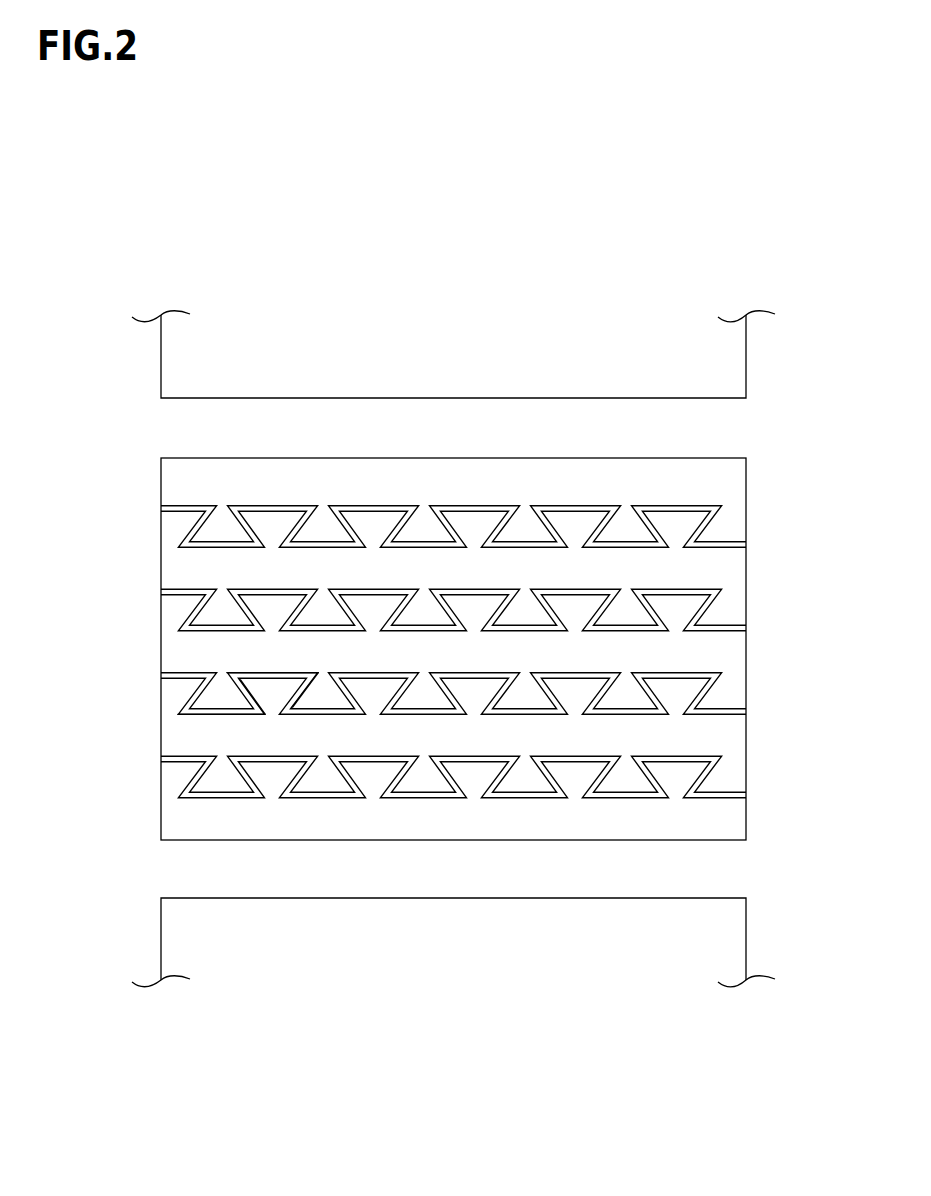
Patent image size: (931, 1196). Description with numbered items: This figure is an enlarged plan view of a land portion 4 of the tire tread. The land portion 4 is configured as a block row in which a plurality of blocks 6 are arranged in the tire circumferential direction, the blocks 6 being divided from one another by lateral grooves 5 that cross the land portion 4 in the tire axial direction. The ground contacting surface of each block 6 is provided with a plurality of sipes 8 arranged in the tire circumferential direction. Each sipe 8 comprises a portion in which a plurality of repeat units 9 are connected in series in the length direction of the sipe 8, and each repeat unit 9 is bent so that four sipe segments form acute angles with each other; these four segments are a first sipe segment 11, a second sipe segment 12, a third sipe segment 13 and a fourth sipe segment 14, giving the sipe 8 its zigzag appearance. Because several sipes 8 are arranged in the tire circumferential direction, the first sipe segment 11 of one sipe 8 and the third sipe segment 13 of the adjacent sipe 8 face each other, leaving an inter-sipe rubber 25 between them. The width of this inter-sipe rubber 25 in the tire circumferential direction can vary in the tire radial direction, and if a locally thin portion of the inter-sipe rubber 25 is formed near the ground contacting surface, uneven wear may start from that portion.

The land portion 4 is at (437, 623).
The lateral groove 5 is at (334, 428).
The block 6 is at (683, 500).
The sipe 8 is at (390, 657).
The repeat unit 9 is at (82, 615).
The first sipe segment 11 is at (217, 714).
The second sipe segment 12 is at (240, 693).
The third sipe segment 13 is at (267, 673).
The fourth sipe segment 14 is at (290, 693).
The inter-sipe rubber 25 is at (700, 572).